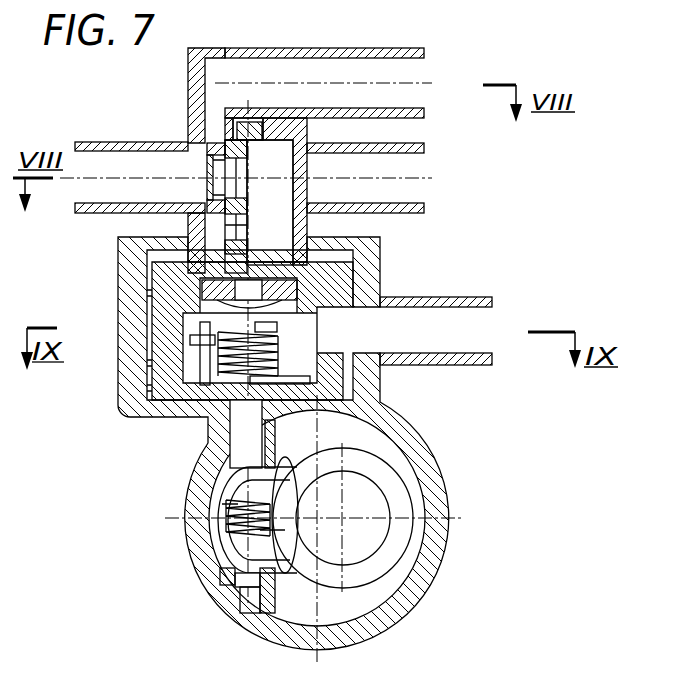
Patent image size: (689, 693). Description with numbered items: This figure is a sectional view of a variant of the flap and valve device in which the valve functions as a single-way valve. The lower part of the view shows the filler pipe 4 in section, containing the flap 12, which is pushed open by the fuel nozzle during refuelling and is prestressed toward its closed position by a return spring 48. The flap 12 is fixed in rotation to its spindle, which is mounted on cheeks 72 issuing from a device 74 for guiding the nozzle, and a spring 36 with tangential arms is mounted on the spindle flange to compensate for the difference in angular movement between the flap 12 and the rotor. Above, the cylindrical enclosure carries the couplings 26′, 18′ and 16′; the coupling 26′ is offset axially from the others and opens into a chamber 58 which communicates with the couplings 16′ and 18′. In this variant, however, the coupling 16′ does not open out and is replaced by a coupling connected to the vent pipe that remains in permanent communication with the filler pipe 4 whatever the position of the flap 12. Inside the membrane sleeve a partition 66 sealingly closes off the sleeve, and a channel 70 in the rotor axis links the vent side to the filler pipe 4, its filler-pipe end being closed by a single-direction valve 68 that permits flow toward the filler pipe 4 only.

The filler pipe 4 is at (433, 480).
The coupling 26′ is at (413, 68).
The coupling 18′ is at (103, 160).
The coupling 16′ is at (410, 186).
The chamber 58 is at (272, 208).
The partition 66 is at (228, 170).
The channel 70 is at (227, 270).
The single-direction valve 68 is at (250, 282).
The spring 36 is at (252, 340).
The return spring 48 is at (227, 520).
The flap 12 is at (297, 483).
The cheeks 72 is at (268, 597).
The device for guiding the nozzle 74 is at (355, 573).